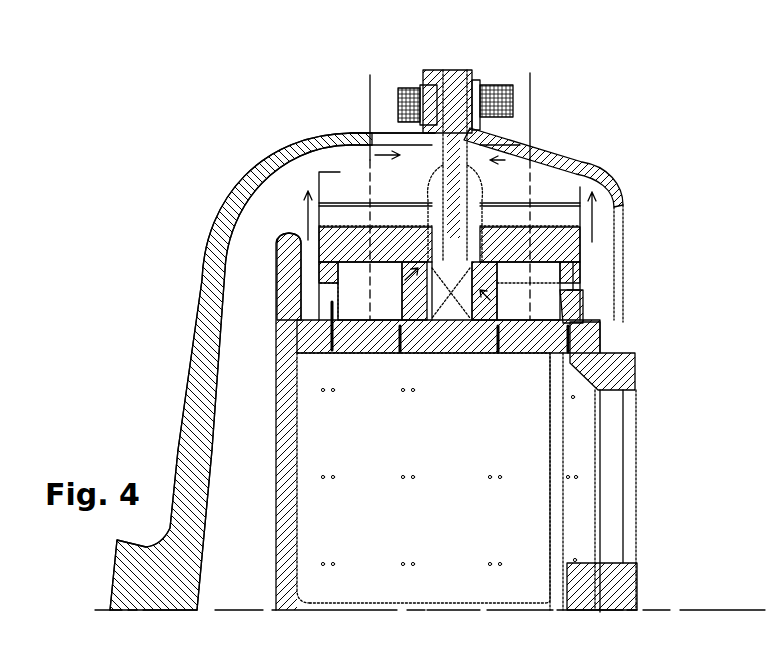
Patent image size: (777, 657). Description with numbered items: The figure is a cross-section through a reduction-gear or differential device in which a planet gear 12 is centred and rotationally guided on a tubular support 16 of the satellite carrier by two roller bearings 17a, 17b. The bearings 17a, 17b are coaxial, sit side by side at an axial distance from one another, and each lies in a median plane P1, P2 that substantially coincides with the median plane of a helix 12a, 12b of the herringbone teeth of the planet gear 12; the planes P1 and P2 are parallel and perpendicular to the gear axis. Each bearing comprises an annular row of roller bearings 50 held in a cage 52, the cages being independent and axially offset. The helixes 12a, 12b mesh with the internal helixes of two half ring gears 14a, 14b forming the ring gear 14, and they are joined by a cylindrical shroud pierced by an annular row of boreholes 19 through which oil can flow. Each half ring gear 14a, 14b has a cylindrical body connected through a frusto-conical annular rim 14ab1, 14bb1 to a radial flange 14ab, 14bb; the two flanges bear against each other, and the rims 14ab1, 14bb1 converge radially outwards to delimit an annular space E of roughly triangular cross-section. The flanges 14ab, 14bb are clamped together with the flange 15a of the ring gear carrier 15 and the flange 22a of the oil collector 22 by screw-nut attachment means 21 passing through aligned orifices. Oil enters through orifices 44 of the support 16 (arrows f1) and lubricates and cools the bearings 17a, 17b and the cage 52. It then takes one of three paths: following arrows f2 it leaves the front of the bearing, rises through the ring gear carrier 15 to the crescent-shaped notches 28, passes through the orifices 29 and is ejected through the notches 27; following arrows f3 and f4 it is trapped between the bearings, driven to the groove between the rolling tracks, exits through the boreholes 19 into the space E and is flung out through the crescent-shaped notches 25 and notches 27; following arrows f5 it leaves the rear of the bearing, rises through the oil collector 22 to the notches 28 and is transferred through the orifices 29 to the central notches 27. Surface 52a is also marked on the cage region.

The planet gear 12 is at (623, 205).
The helix 12a is at (301, 243).
The helix 12b is at (600, 237).
The ring gear 14 is at (562, 183).
The half ring gear 14a is at (345, 175).
The half ring gear 14b is at (550, 187).
The annular flange 14ab is at (415, 130).
The annular flange 14bb is at (520, 150).
The annular rim 14ab1 is at (350, 138).
The annular rim 14bb1 is at (548, 158).
The ring gear carrier 15 is at (320, 140).
The annular flange 15a is at (433, 70).
The tubular support 16 is at (635, 387).
The row of rolling elements 17a is at (291, 311).
The row of rolling elements 17b is at (606, 299).
The boreholes 19 is at (320, 180).
The attachment means 21 is at (397, 98).
The oil collector 22 is at (623, 171).
The flange 22a is at (468, 66).
The crescent-shaped notches 25 is at (446, 68).
The notches 27 is at (460, 67).
The crescent-shaped notches 28 is at (478, 78).
The through-orifices 29 is at (502, 82).
The orifices 44 is at (290, 327).
The roller bearings 50 is at (603, 272).
The cage 52 is at (580, 295).
The support member surface 52a is at (614, 286).
The median plane P1 is at (370, 80).
The median plane P2 is at (530, 73).
The annular space E is at (466, 192).
The arrows f1 is at (280, 337).
The arrows f2 is at (300, 225).
The arrows f3 is at (440, 275).
The arrows f4 is at (490, 290).
The arrows f5 is at (598, 215).